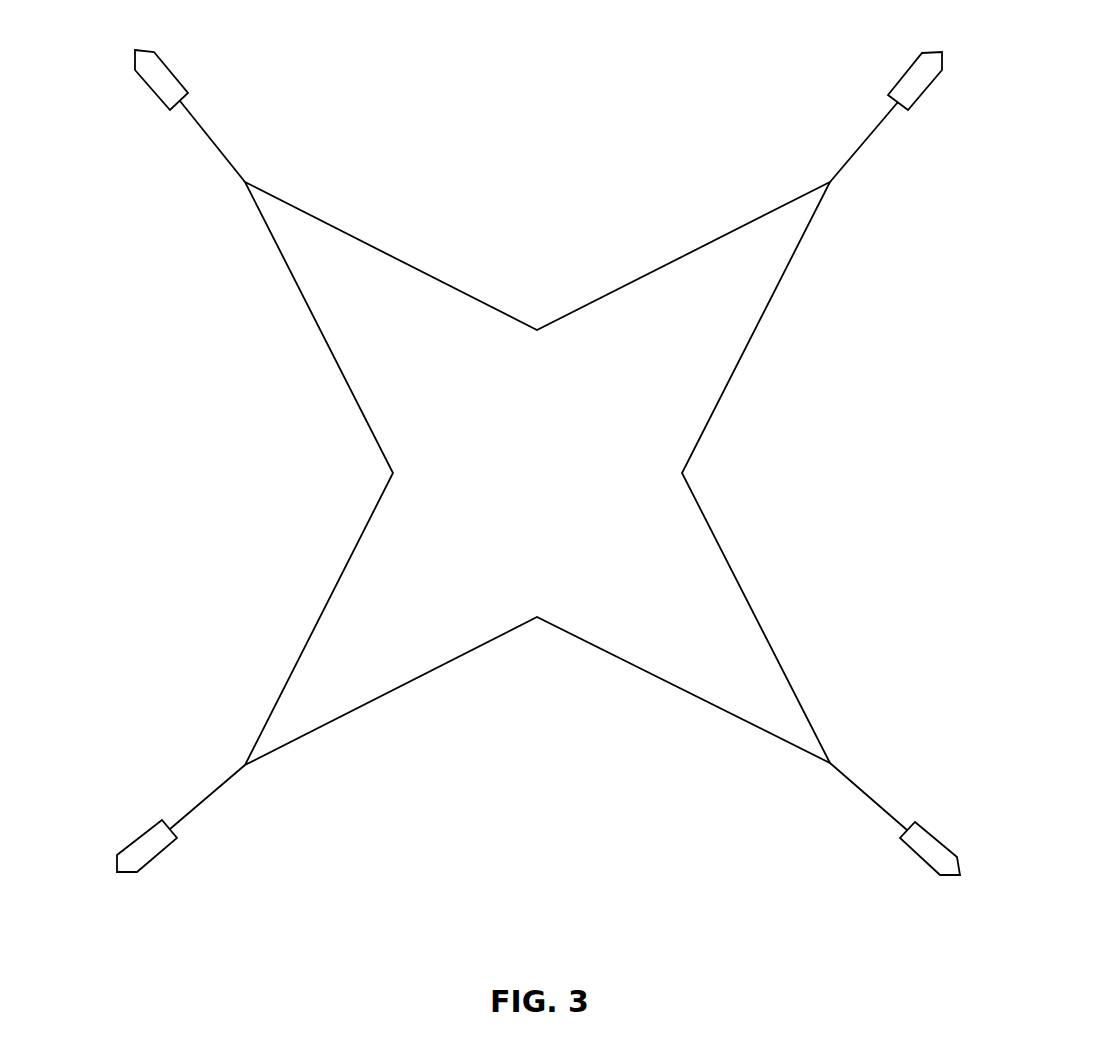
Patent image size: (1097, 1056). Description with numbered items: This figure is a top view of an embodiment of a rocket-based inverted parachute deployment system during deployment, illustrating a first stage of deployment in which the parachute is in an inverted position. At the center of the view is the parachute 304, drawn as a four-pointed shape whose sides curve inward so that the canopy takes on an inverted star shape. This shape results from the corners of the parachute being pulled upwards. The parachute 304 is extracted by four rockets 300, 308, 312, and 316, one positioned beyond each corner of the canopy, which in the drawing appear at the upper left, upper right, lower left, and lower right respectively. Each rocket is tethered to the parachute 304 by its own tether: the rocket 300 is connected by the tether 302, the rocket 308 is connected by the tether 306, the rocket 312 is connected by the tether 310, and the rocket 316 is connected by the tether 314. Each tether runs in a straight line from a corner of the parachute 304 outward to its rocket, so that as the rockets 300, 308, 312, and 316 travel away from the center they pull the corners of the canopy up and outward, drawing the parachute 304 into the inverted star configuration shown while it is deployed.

The rocket 300 is at (135, 67).
The tether 302 is at (210, 140).
The parachute 304 is at (672, 278).
The tether 306 is at (858, 147).
The rocket 308 is at (905, 73).
The tether 310 is at (203, 798).
The rocket 312 is at (125, 877).
The tether 314 is at (868, 800).
The rocket 316 is at (922, 858).